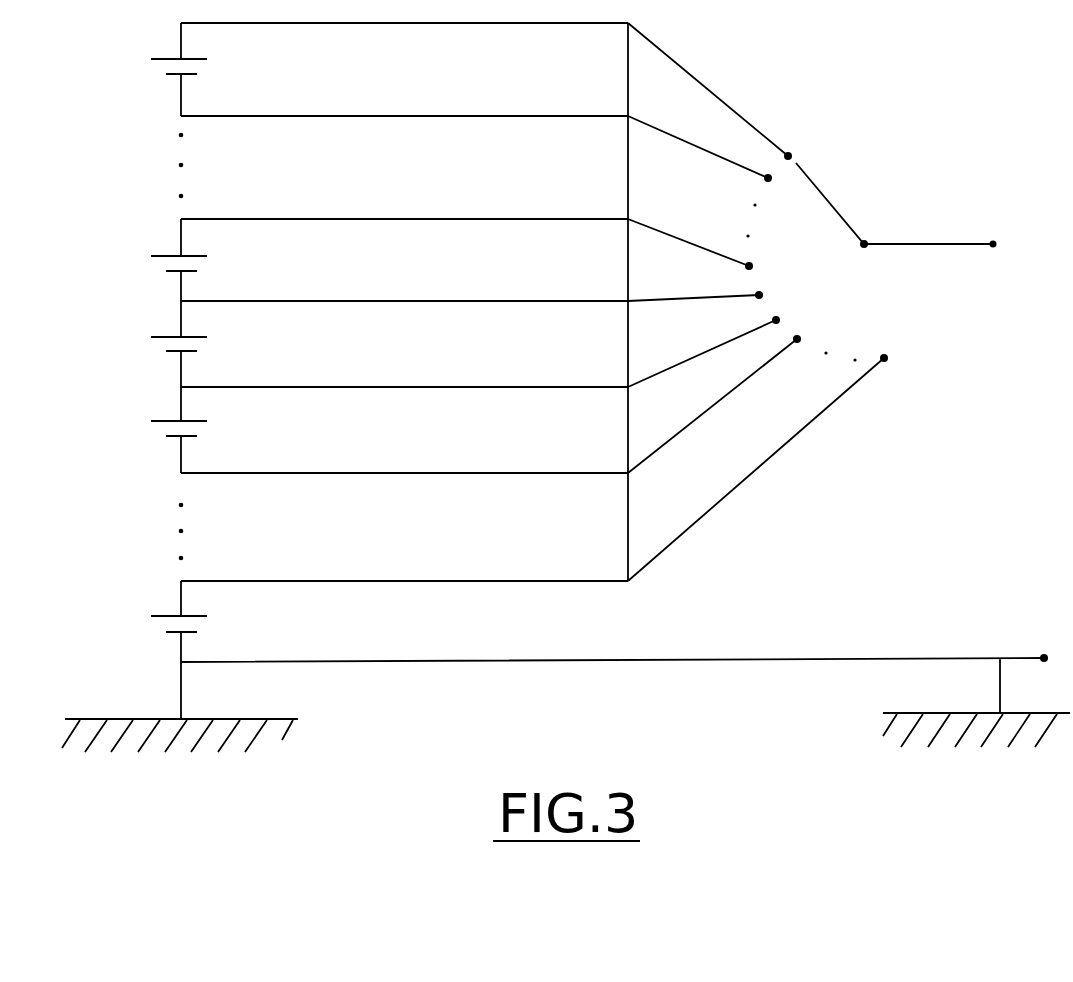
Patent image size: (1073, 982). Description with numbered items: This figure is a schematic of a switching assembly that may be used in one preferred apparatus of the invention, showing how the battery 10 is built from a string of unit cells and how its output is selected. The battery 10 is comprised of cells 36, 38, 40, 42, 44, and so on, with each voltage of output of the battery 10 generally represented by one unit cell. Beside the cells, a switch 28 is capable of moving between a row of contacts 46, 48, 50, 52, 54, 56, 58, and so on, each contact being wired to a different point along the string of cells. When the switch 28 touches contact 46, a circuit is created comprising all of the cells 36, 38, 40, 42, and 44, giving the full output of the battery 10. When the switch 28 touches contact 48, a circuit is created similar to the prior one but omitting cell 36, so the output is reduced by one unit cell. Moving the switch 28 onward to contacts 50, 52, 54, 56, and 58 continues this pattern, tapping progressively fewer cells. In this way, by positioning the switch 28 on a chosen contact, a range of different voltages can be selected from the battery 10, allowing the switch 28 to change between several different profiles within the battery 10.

The battery 10 is at (782, 108).
The switch 28 is at (888, 182).
The cell 36 is at (153, 84).
The cell 38 is at (153, 281).
The cell 40 is at (153, 363).
The cell 42 is at (153, 448).
The cell 44 is at (153, 643).
The contact 46 is at (730, 91).
The contact 48 is at (700, 160).
The contact 50 is at (709, 244).
The contact 52 is at (715, 285).
The contact 54 is at (726, 343).
The contact 56 is at (736, 400).
The contact 58 is at (782, 457).